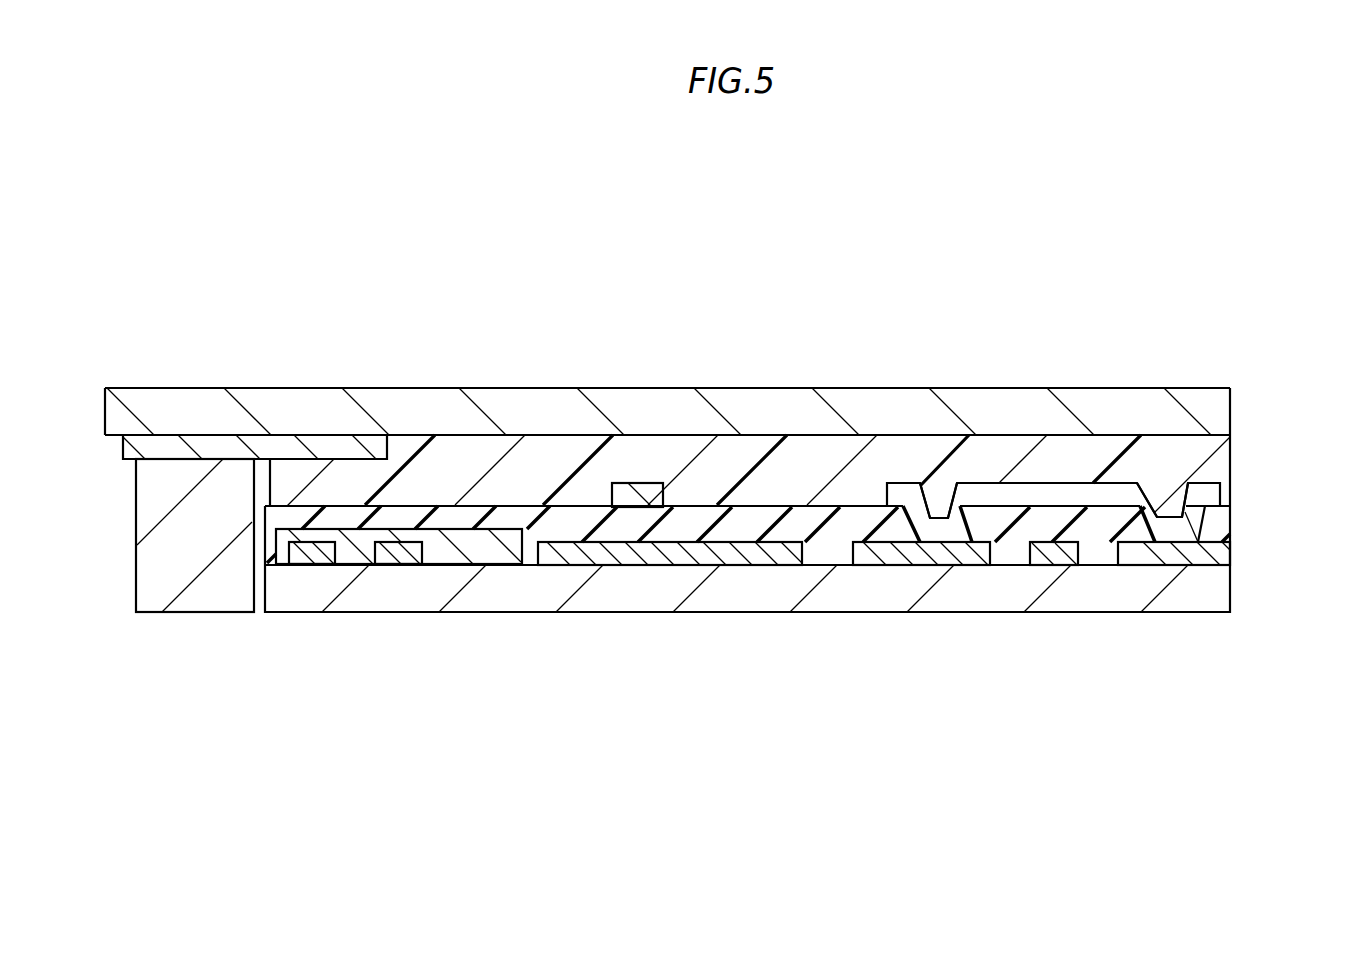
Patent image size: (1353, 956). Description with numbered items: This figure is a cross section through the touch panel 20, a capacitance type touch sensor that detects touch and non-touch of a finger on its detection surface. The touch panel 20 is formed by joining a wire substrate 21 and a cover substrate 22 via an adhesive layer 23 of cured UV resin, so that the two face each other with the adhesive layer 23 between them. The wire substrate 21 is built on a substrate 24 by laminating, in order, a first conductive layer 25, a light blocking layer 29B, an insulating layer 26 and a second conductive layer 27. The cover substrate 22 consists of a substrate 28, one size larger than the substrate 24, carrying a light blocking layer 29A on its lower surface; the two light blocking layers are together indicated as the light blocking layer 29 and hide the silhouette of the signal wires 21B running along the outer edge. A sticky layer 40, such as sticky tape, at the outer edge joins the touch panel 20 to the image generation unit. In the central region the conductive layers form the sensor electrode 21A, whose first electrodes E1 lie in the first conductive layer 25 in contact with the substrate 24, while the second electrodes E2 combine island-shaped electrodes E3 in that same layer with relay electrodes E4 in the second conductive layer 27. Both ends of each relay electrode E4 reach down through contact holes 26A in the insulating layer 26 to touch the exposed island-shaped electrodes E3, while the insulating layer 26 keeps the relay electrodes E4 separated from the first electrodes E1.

The touch panel 20 is at (1264, 256).
The wire substrate 21 is at (1296, 483).
The sensor electrode 21A is at (690, 200).
The signal wire 21B is at (310, 553).
The cover substrate 22 is at (1291, 390).
The adhesive layer 23 is at (1222, 458).
The substrate 24 is at (1222, 588).
The first conductive layer 25 is at (1222, 553).
The insulating layer 26 is at (1222, 523).
The contact hole 26A is at (916, 489).
The second conductive layer 27 is at (1210, 494).
The substrate 28 is at (1210, 412).
The light blocking layer 29 is at (290, 332).
The light blocking layer 29A is at (314, 440).
The light blocking layer 29B is at (455, 552).
The sticky layer 40 is at (197, 596).
The first electrode E1 is at (737, 553).
The second electrode E2 is at (630, 497).
The island-shaped electrode E3 is at (960, 552).
The relay electrode E4 is at (1052, 492).